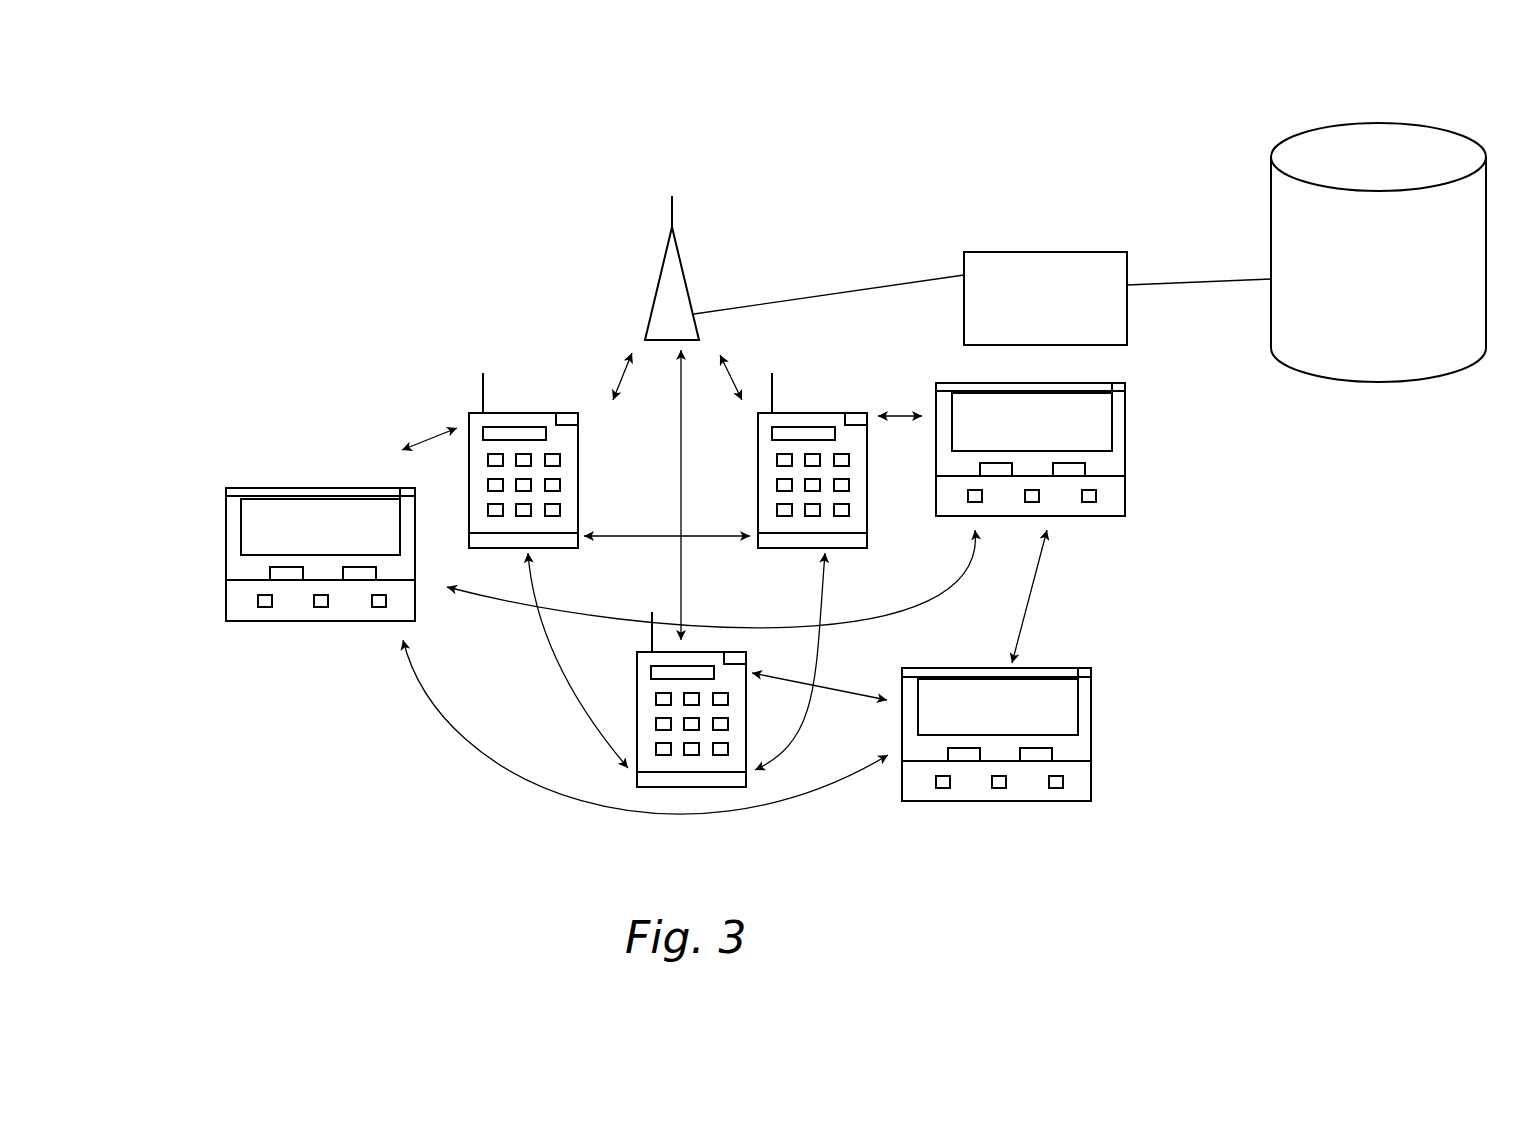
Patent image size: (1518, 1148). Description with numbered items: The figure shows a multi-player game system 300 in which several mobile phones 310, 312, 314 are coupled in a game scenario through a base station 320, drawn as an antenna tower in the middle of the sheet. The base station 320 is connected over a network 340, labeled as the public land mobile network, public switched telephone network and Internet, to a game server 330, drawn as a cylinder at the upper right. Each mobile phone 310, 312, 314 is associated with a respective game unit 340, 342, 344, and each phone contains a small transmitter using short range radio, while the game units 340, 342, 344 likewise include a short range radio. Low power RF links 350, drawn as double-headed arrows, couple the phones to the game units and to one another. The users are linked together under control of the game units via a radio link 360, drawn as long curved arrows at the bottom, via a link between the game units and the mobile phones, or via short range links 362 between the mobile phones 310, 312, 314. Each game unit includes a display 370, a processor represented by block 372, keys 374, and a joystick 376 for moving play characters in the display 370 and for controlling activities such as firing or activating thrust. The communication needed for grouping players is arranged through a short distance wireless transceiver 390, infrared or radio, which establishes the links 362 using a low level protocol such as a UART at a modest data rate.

The multi-player game system 300 is at (585, 155).
The mobile phone 310 is at (523, 404).
The mobile phone 312 is at (628, 703).
The mobile phone 314 is at (818, 403).
The base station 320 is at (744, 207).
The game server 330 is at (1270, 183).
The network 340 is at (1088, 251).
The game unit 342 is at (975, 820).
The game unit 344 is at (1153, 463).
The low power RF link 350 is at (428, 440).
The radio link 360 is at (527, 612).
The short range link 362 is at (640, 535).
The display 370 is at (272, 512).
The processor 372 is at (270, 572).
The keys 374 is at (372, 572).
The joystick 376 is at (264, 607).
The short distance wireless transceiver 390 is at (380, 607).